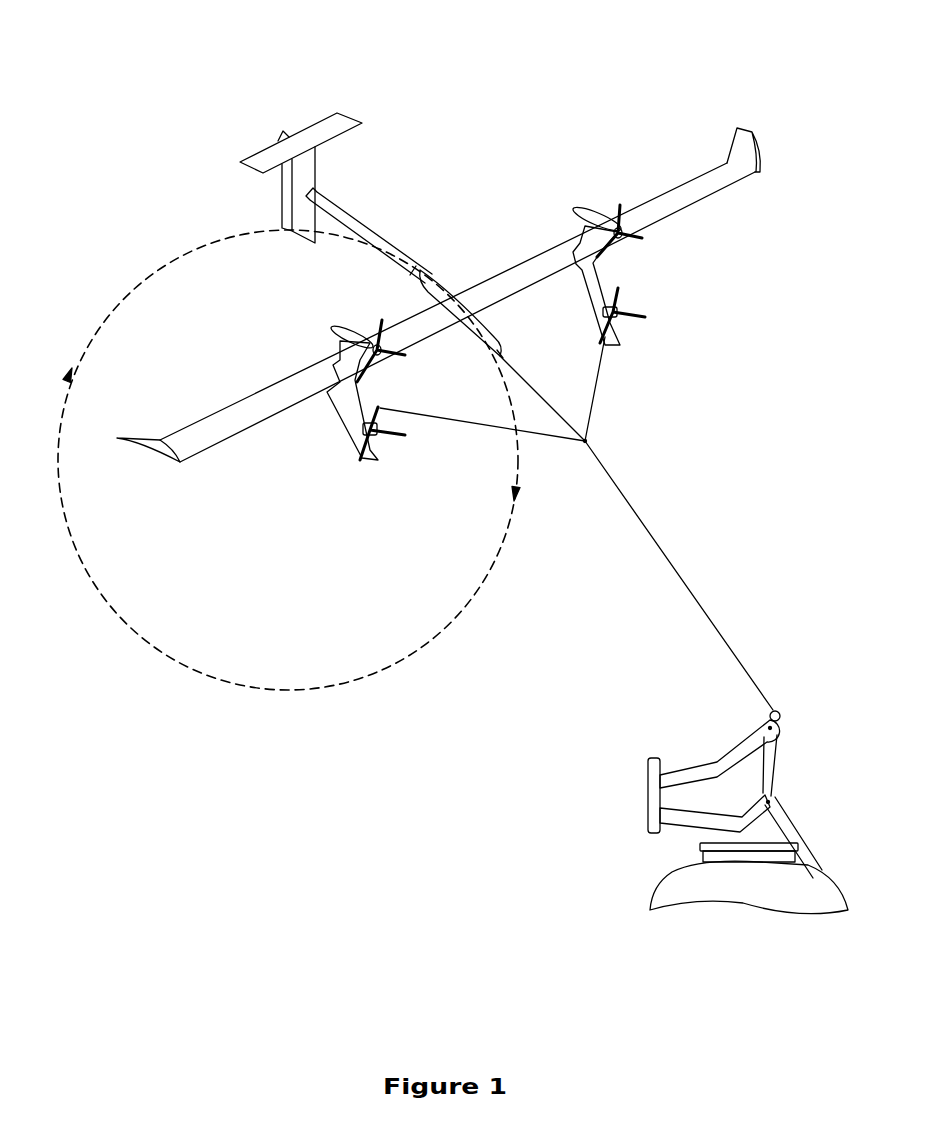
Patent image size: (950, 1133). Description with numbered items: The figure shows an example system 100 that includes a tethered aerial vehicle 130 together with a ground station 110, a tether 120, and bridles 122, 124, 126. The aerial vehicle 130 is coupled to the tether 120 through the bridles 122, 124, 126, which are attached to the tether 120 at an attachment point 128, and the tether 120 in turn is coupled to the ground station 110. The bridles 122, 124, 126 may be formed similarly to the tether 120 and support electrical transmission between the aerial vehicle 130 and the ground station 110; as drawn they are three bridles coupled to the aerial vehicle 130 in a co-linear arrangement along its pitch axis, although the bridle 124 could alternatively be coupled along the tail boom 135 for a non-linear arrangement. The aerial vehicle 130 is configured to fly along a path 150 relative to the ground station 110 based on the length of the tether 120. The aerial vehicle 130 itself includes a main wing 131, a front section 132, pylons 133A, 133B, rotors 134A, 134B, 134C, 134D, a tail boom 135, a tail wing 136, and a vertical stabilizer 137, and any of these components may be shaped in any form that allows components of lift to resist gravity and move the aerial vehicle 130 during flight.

The system 100 is at (157, 56).
The ground station 110 is at (648, 778).
The tether 120 is at (703, 607).
The bridle 122 is at (595, 390).
The bridle 124 is at (557, 412).
The bridle 126 is at (562, 440).
The attachment point 128 is at (592, 444).
The aerial vehicle 130 is at (815, 122).
The main wing 131 is at (518, 286).
The front section 132 is at (478, 332).
The pylon 133A is at (582, 227).
The pylon 133B is at (347, 352).
The rotor 134A is at (625, 240).
The rotor 134B is at (627, 320).
The rotor 134C is at (387, 363).
The rotor 134D is at (387, 442).
The tail boom 135 is at (377, 233).
The tail wing 136 is at (355, 118).
The vertical stabilizer 137 is at (308, 238).
The path 150 is at (118, 300).